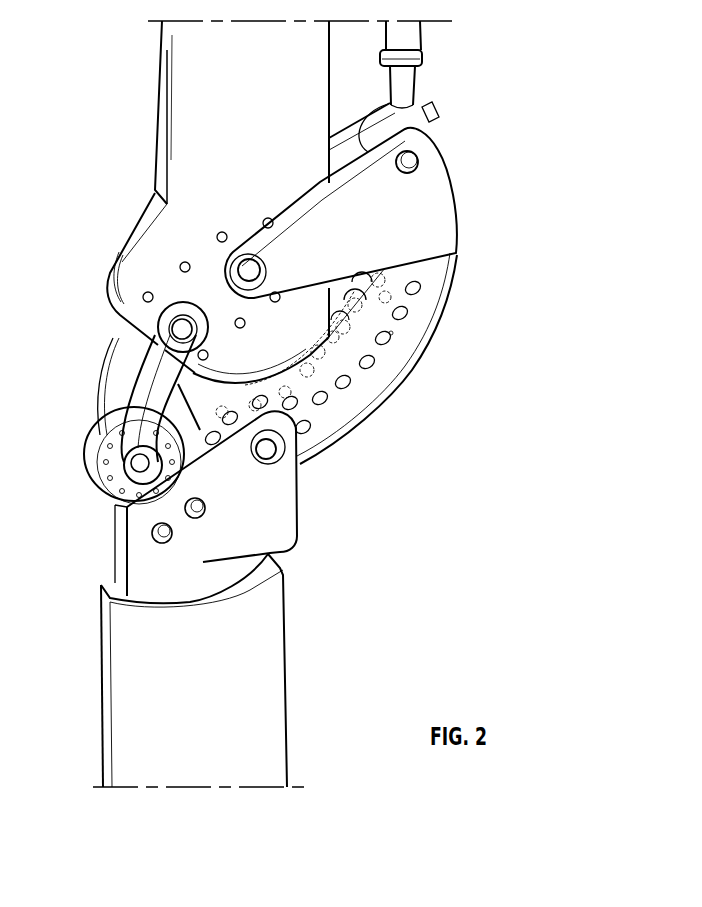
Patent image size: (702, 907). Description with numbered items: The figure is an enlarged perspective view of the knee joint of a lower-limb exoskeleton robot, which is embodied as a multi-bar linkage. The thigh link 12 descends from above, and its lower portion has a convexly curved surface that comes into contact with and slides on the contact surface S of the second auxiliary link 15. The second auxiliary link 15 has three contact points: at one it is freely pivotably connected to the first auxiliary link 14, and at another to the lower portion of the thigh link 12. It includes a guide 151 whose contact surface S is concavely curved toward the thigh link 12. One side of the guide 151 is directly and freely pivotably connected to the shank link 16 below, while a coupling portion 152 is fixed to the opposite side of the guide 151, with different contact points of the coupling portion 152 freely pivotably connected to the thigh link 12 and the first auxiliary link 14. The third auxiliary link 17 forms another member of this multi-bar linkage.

The thigh link 12 is at (182, 132).
The first auxiliary link 14 is at (410, 38).
The second auxiliary link 15 is at (483, 243).
The guide 151 is at (437, 333).
The coupling portion 152 is at (432, 188).
The contact surface S is at (391, 333).
The shank link 16 is at (292, 520).
The third auxiliary link 17 is at (148, 392).